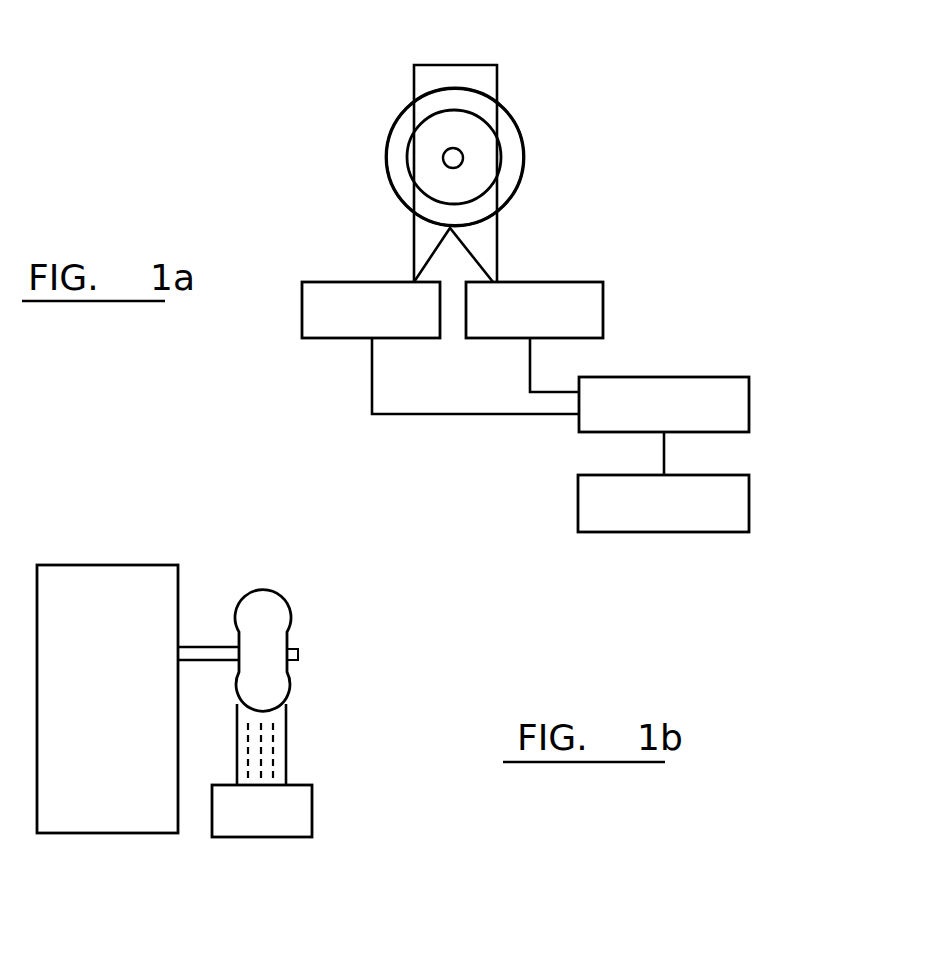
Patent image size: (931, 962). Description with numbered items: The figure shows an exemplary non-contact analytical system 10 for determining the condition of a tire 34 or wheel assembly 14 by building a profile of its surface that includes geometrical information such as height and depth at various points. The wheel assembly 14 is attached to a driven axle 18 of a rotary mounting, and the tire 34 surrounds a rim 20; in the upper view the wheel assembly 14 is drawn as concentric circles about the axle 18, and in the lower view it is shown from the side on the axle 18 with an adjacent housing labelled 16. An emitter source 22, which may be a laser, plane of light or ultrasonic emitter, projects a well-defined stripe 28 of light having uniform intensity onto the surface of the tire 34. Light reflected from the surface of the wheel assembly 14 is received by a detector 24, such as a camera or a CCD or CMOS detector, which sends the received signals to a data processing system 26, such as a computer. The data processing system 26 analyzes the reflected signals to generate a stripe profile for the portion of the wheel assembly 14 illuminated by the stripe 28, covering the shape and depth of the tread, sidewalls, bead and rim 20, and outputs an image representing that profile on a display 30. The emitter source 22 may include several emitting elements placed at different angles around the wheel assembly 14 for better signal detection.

In FIG. 1B, the non-contact analytical system 10 is at (322, 825).
In FIG. 1A, the wheel assembly 14 is at (508, 95).
In FIG. 1B, the wheel assembly 14 is at (288, 600).
In FIG. 1A, the housing 16 is at (487, 75).
In FIG. 1B, the housing 16 is at (108, 822).
In FIG. 1A, the driven axle 18 is at (458, 162).
In FIG. 1B, the driven axle 18 is at (205, 647).
In FIG. 1A, the rim 20 is at (493, 162).
In FIG. 1A, the emitter source 22 is at (315, 338).
In FIG. 1A, the detector 24 is at (605, 283).
In FIG. 1A, the data processing system 26 is at (713, 377).
In FIG. 1A, the stripe of light 28 is at (430, 253).
In FIG. 1B, the stripe of light 28 is at (272, 750).
In FIG. 1A, the display 30 is at (723, 532).
In FIG. 1A, the tire 34 is at (524, 142).